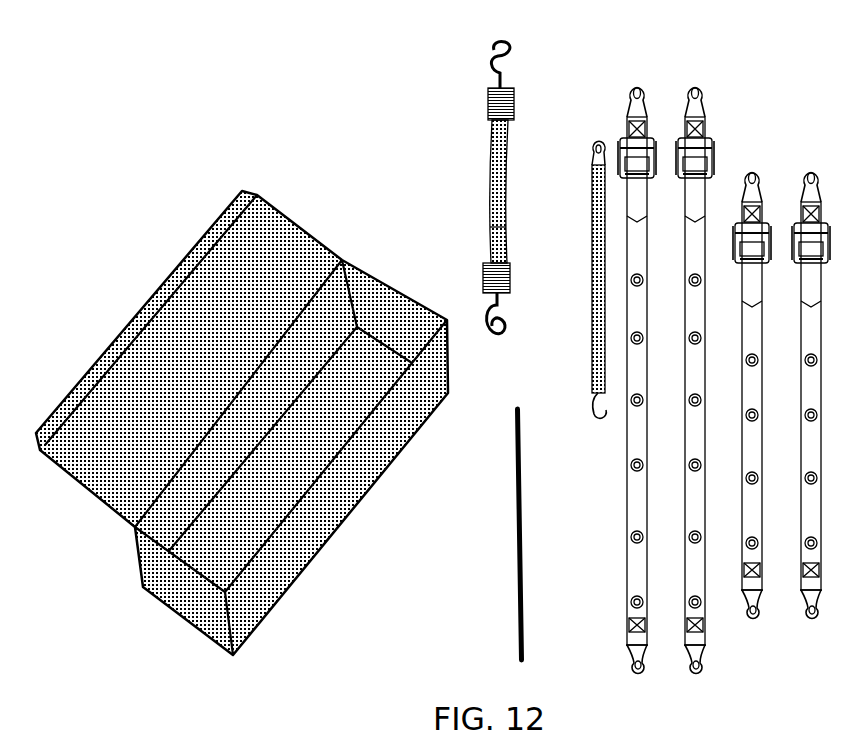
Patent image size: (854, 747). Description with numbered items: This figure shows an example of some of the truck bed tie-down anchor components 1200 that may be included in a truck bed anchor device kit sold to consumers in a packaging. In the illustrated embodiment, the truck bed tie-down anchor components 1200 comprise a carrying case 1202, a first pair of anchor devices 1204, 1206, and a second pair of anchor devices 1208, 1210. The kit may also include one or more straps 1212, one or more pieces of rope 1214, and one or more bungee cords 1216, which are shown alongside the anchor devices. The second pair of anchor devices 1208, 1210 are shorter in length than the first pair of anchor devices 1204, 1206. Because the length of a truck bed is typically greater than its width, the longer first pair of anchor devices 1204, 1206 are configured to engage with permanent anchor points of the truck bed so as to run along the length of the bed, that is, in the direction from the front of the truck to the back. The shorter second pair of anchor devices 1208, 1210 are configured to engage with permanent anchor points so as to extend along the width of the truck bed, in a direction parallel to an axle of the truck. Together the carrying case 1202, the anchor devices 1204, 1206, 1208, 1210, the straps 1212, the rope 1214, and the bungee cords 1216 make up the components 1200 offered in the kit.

The truck bed tie-down anchor components 1200 is at (196, 136).
The carrying case 1202 is at (337, 528).
The first pair of anchor devices 1204 is at (637, 81).
The first pair of anchor devices 1206 is at (699, 81).
The second pair of anchor devices 1208 is at (758, 168).
The second pair of anchor devices 1210 is at (809, 629).
The strap 1212 is at (498, 152).
The piece of rope 1214 is at (516, 590).
The bungee cord 1216 is at (597, 285).